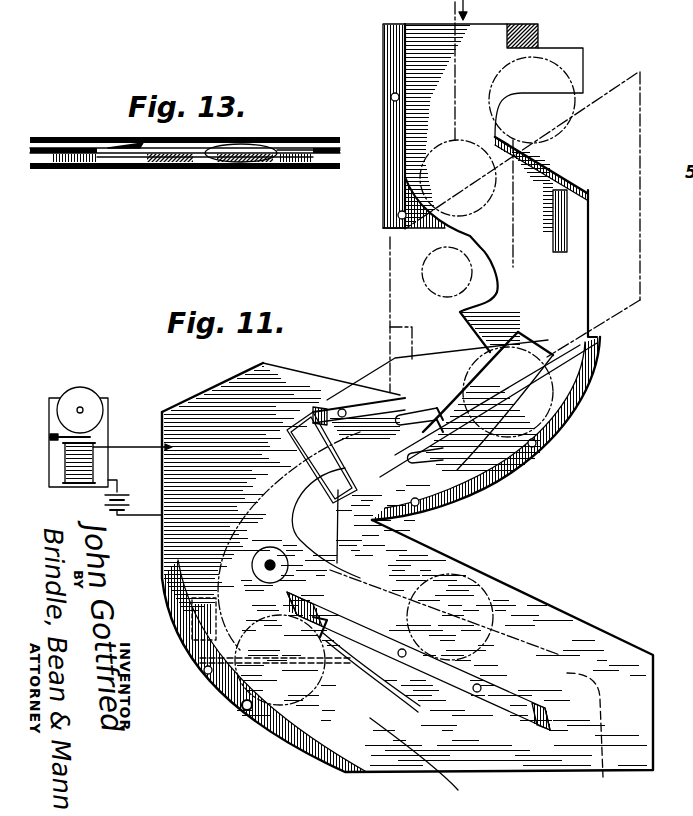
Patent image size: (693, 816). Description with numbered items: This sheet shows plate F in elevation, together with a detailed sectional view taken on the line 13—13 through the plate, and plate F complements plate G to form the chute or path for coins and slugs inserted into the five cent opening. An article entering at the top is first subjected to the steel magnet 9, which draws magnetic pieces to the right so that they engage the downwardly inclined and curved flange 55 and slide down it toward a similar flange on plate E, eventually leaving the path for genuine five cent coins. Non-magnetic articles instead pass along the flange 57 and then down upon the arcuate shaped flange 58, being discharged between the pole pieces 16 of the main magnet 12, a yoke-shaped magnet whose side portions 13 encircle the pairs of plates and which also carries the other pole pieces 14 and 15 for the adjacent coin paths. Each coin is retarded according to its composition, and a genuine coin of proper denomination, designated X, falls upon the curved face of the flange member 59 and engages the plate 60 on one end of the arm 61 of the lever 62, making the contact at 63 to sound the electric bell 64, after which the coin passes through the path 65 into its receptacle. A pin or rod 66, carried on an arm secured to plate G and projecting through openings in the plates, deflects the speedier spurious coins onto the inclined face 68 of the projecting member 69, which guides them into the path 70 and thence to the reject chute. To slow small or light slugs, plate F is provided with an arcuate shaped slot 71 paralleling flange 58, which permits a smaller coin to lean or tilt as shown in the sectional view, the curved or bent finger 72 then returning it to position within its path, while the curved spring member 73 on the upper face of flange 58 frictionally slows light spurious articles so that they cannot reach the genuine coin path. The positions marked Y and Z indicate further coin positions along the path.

In FIG. 11, the steel magnet 9 is at (538, 33).
In FIG. 11, the main magnet 12 is at (634, 117).
In FIG. 11, the side portions of the main magnet 13 is at (582, 338).
In FIG. 11, the pole piece 14 is at (430, 290).
In FIG. 11, the pole piece 15 is at (391, 338).
In FIG. 11, the pole piece 16 is at (298, 425).
In FIG. 11, the downwardly inclined and curved flange 55 is at (577, 170).
In FIG. 11, the flange 57 is at (388, 182).
In FIG. 13, the arcuate shaped flange 58 is at (296, 160).
In FIG. 11, the arcuate shaped flange 58 is at (576, 397).
In FIG. 11, the flange member 59 is at (407, 556).
In FIG. 11, the plate 60 is at (358, 664).
In FIG. 11, the arm 61 is at (232, 668).
In FIG. 11, the lever 62 is at (188, 657).
In FIG. 11, the contact 63 is at (203, 614).
In FIG. 11, the electric bell 64 is at (92, 402).
In FIG. 11, the path 65 is at (414, 754).
In FIG. 11, the pin or rod 66 is at (278, 568).
In FIG. 11, the inclined face 68 is at (410, 658).
In FIG. 11, the projecting member 69 is at (486, 698).
In FIG. 11, the path 70 is at (603, 725).
In FIG. 13, the arcuate shaped slot 71 is at (297, 147).
In FIG. 11, the arcuate shaped slot 71 is at (556, 352).
In FIG. 13, the curved or bent finger 72 is at (130, 150).
In FIG. 11, the curved or bent finger 72 is at (425, 410).
In FIG. 13, the curved spring member 73 is at (196, 158).
In FIG. 11, the curved spring member 73 is at (500, 480).
In FIG. 13, the plate E is at (52, 137).
In FIG. 13, the plate F is at (31, 153).
In FIG. 11, the plate F is at (435, 45).
In FIG. 13, the plate G is at (170, 165).
In FIG. 11, the genuine coin X is at (303, 678).
In FIG. 11, the roller position Y is at (568, 83).
In FIG. 11, the roller position Z is at (470, 598).